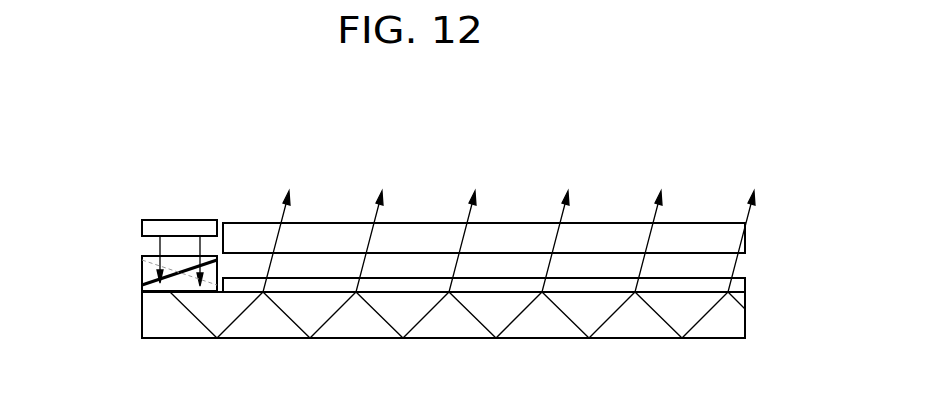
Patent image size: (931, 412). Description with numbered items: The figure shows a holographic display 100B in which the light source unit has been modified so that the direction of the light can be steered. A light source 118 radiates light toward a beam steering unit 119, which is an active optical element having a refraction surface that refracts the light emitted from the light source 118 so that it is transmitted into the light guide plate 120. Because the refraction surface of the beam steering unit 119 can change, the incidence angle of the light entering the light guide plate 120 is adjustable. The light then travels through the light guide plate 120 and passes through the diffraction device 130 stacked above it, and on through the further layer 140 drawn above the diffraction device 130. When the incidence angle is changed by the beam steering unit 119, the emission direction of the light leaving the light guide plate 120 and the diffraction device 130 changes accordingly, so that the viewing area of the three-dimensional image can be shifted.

The holographic display 100B is at (116, 188).
The light source 118 is at (142, 226).
The beam steering unit 119 is at (142, 275).
The light guide plate 120 is at (745, 320).
The diffraction device 130 is at (745, 285).
The diffusion/optical sheet 140 is at (745, 248).